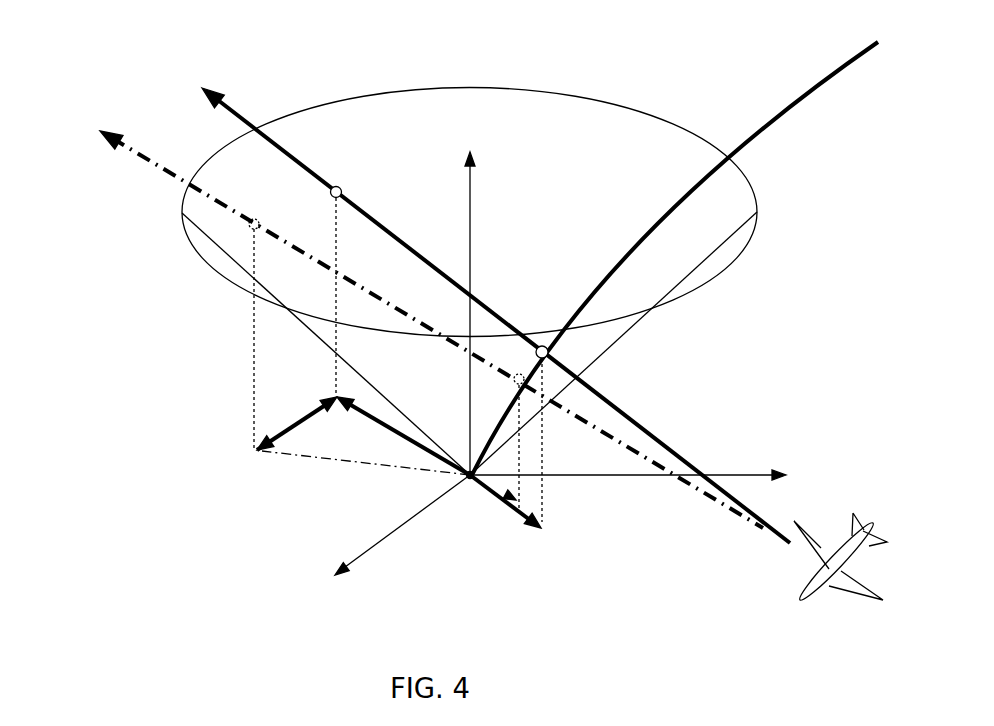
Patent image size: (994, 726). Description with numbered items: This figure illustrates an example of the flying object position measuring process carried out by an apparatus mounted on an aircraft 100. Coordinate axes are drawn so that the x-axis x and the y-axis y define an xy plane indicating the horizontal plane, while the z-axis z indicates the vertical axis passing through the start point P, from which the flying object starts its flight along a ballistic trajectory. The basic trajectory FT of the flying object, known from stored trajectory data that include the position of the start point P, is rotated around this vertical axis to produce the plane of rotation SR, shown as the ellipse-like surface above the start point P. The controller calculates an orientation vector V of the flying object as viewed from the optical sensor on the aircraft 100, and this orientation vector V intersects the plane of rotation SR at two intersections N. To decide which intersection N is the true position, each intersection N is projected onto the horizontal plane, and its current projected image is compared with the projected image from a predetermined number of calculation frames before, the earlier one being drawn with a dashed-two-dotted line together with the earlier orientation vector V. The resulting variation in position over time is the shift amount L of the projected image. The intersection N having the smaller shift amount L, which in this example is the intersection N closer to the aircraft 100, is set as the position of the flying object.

The plane of rotation SR is at (590, 147).
The basic trajectory FT is at (807, 97).
The orientation vector V is at (244, 118).
The intersection N is at (340, 187).
The shift amount L is at (436, 471).
The start point P is at (467, 481).
The aircraft 100 is at (847, 590).
The x-axis x is at (394, 537).
The y-axis y is at (639, 473).
The z-axis z is at (470, 295).